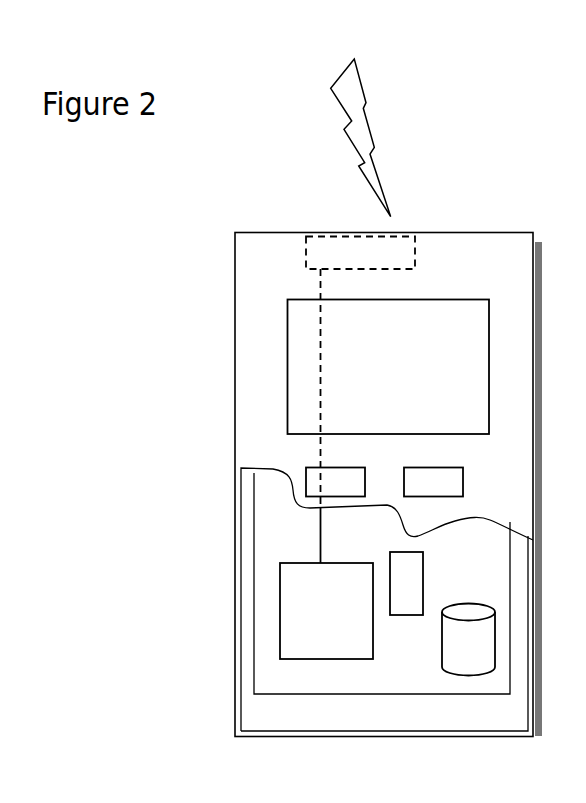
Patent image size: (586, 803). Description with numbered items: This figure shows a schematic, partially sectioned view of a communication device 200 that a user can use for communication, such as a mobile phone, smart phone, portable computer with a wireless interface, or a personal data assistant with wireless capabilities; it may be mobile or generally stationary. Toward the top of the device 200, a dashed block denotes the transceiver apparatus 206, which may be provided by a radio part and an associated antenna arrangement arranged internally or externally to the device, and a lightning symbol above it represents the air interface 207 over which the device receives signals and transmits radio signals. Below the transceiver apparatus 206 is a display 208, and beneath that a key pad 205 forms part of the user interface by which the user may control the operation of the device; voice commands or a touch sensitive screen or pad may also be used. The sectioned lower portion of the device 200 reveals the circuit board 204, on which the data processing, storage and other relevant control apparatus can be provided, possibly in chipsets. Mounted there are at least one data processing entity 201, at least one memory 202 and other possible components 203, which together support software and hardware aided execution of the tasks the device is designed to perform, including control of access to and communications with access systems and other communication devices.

The mobile device housing 200 is at (235, 274).
The data processing entity 201 is at (287, 595).
The memory 202 is at (462, 651).
The other possible components 203 is at (406, 568).
The circuit board 204 is at (279, 678).
The key pad 205 is at (310, 482).
The transceiver apparatus 206 is at (407, 247).
The air interface 207 is at (395, 162).
The display 208 is at (303, 353).